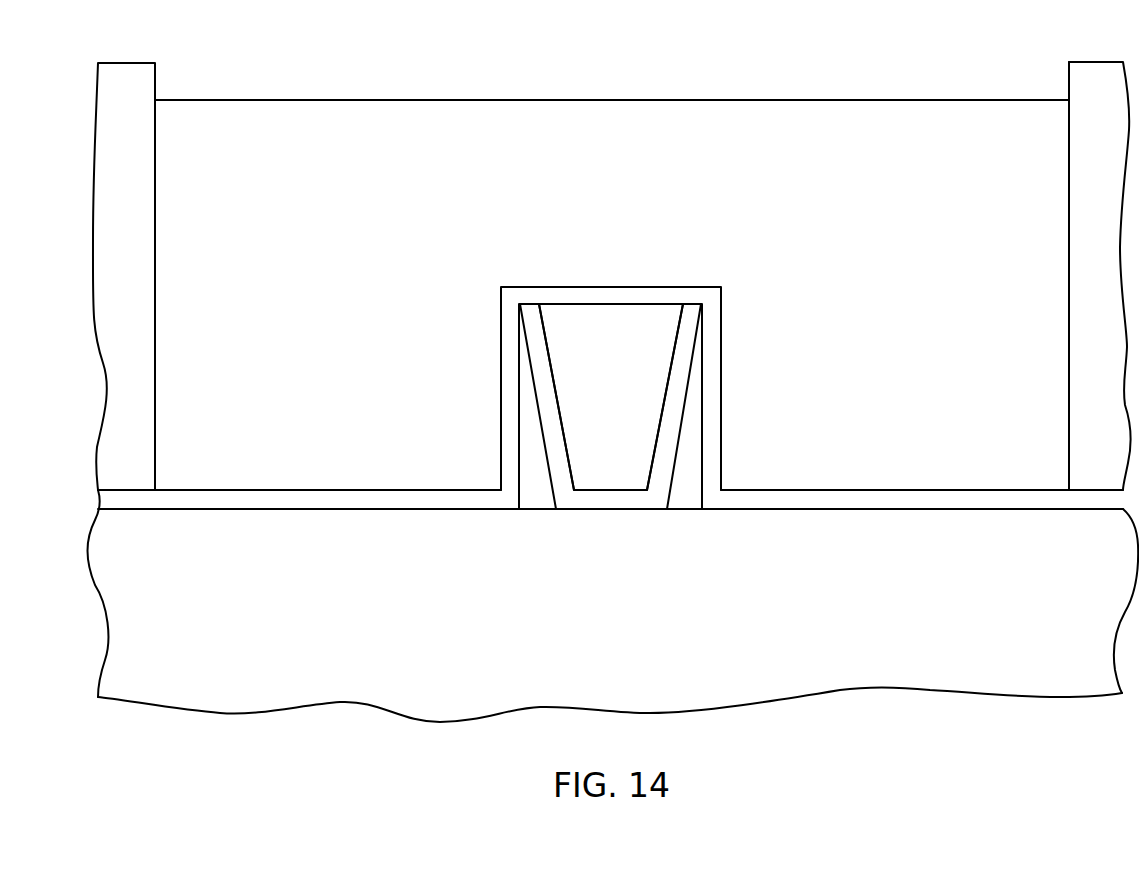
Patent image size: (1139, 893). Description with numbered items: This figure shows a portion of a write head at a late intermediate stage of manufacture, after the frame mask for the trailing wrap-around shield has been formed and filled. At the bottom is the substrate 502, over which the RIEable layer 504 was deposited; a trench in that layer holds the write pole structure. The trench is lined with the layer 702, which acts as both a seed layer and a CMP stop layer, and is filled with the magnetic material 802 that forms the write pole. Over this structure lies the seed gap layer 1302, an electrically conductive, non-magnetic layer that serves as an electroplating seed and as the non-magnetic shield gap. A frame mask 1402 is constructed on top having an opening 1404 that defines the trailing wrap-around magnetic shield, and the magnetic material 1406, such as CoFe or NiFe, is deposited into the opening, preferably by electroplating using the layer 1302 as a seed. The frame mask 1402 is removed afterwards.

The substrate 502 is at (660, 613).
The RIEable layer 504 is at (528, 450).
The seed and CMP stop layer 702 is at (547, 395).
The magnetic material 802 is at (648, 352).
The seed gap layer 1302 is at (712, 378).
The frame mask 1402 is at (135, 91).
The opening 1404 is at (1069, 183).
The magnetic material 1406 is at (672, 167).